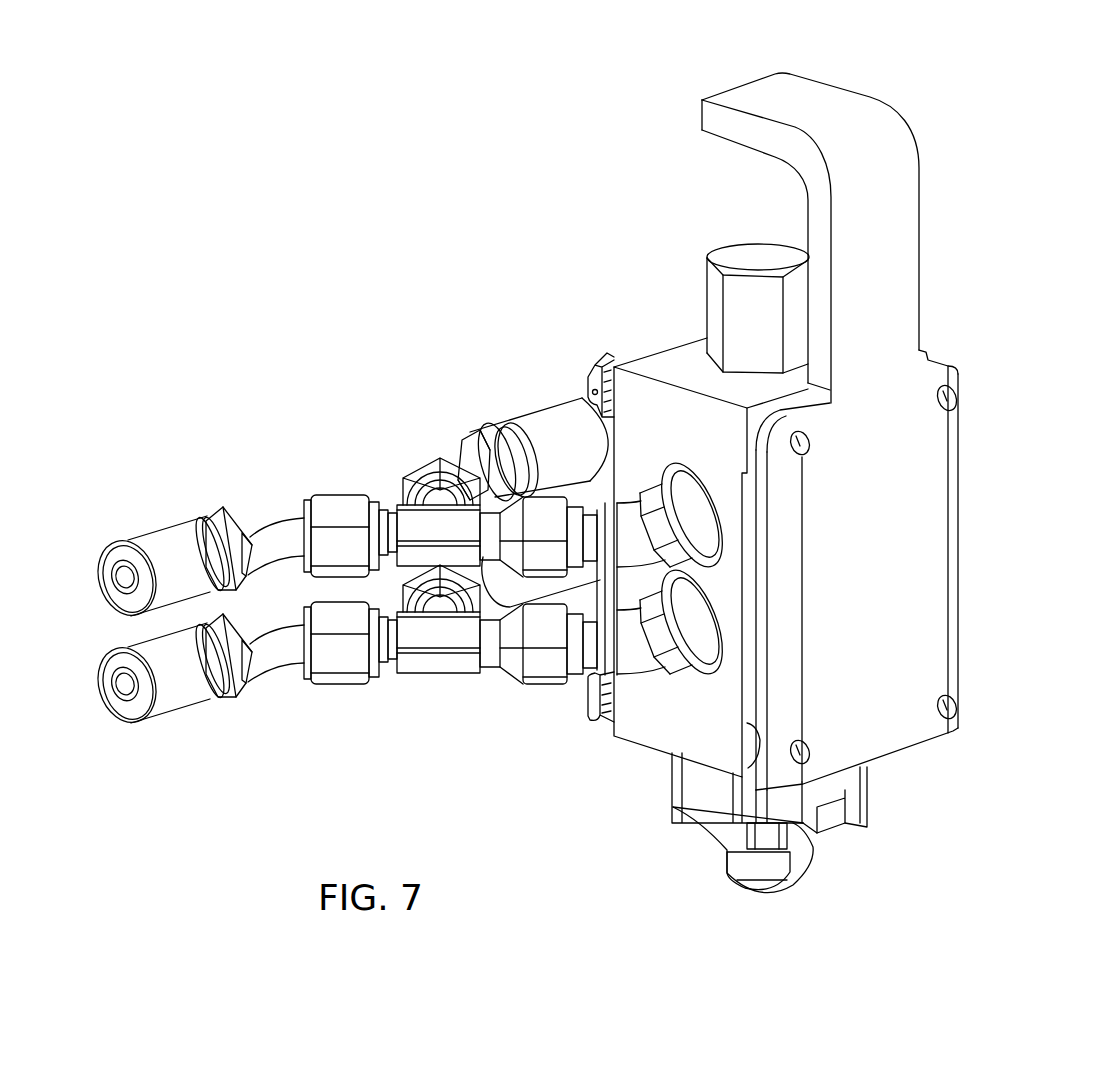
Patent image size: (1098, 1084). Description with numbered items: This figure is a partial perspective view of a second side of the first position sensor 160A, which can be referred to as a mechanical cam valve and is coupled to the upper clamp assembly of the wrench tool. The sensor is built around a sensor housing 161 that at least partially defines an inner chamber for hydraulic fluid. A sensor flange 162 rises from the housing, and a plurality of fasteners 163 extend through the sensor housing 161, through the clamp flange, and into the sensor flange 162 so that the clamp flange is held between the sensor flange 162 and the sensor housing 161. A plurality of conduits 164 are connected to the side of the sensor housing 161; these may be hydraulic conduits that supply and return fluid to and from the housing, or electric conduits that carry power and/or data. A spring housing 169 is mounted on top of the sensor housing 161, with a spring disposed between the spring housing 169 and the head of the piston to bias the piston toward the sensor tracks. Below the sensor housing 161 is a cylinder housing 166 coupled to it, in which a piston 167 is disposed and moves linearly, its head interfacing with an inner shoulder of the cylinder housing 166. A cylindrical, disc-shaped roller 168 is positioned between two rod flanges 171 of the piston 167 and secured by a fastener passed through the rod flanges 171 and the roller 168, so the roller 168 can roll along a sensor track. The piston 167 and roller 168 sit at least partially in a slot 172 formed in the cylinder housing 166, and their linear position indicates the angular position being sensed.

The first position sensor 160A is at (962, 103).
The sensor housing 161 is at (628, 418).
The sensor flange 162 is at (890, 285).
The fasteners 163 is at (943, 412).
The conduits 164 is at (275, 640).
The cylinder housing 166 is at (703, 782).
The piston 167 is at (723, 880).
The roller 168 is at (800, 867).
The spring housing 169 is at (733, 303).
The rod flanges 171 is at (758, 870).
The slot 172 is at (827, 817).